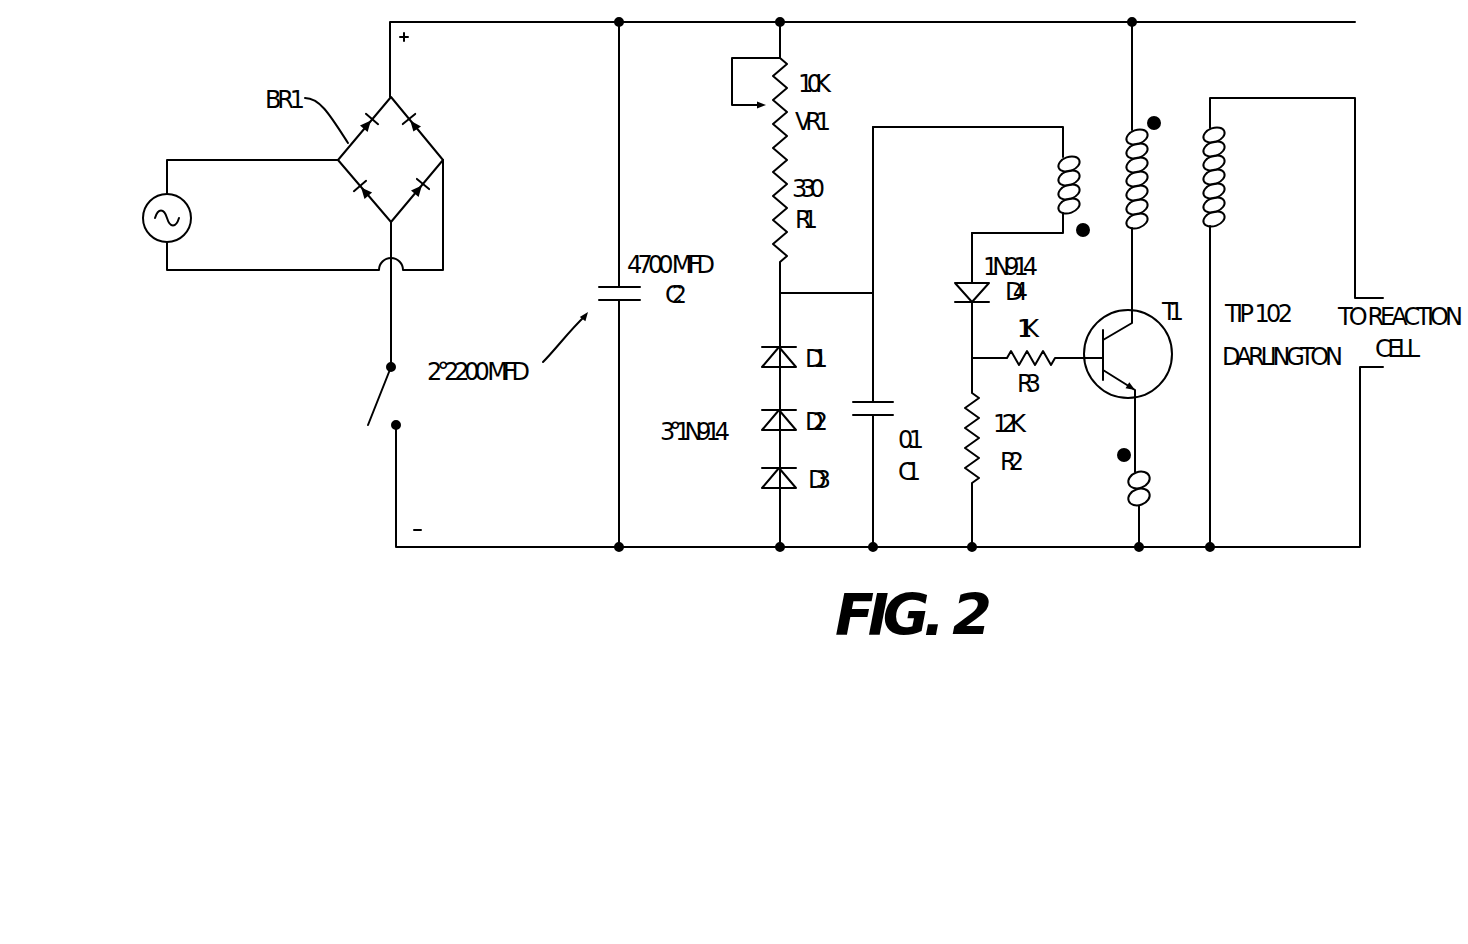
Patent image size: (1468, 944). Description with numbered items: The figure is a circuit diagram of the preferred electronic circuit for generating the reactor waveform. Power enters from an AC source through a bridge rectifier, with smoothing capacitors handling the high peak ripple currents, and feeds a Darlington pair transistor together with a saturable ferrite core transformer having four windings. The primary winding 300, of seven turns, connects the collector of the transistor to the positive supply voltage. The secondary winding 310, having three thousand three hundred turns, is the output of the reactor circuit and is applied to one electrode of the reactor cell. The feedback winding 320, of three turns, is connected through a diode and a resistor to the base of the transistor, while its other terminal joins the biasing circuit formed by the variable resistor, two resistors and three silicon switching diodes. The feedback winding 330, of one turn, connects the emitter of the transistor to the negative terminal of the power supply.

The primary winding 300 is at (1120, 125).
The secondary winding 310 is at (1232, 146).
The feedback winding 320 is at (1048, 157).
The feedback winding 330 is at (1124, 500).